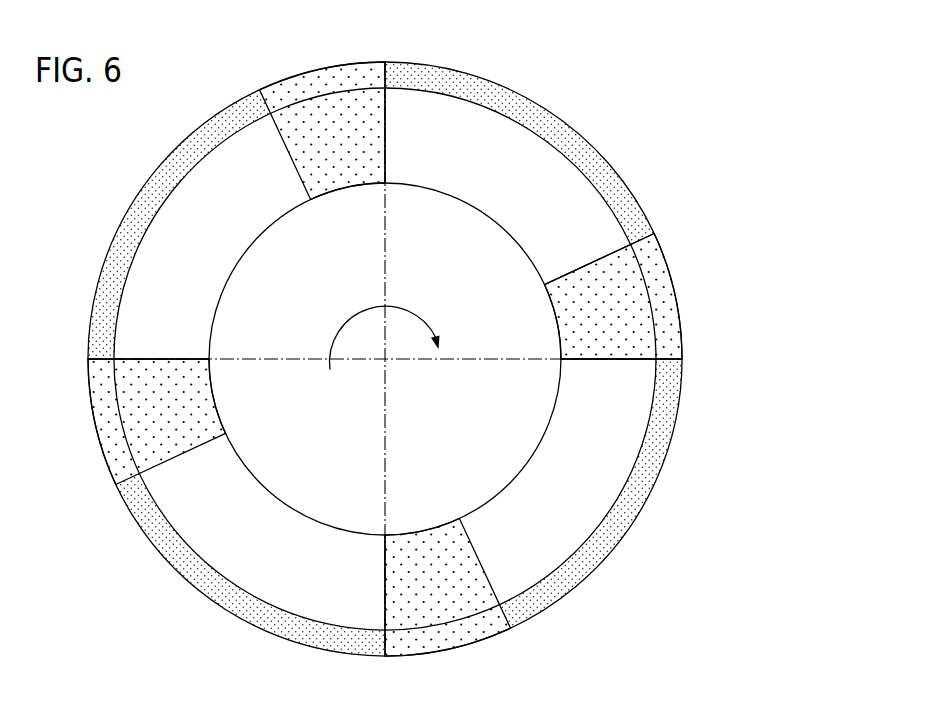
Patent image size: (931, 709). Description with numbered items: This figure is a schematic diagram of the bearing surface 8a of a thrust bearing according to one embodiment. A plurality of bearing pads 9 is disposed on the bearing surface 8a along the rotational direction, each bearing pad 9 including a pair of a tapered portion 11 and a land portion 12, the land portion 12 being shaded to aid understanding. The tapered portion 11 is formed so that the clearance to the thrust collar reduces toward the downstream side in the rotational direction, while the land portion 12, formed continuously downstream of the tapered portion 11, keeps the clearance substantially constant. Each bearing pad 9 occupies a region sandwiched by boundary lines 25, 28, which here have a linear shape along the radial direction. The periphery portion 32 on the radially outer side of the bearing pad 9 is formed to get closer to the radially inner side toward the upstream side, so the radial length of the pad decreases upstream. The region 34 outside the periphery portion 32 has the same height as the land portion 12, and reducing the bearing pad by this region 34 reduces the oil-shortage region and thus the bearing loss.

The bearing surface 8a is at (623, 110).
The bearing pad 9 is at (732, 145).
The tapered portion 11 is at (627, 228).
The land portion 12 is at (652, 311).
The boundary line 25 is at (385, 102).
The boundary line 28 is at (603, 252).
The periphery portion 32 is at (538, 138).
The region 34 is at (477, 92).